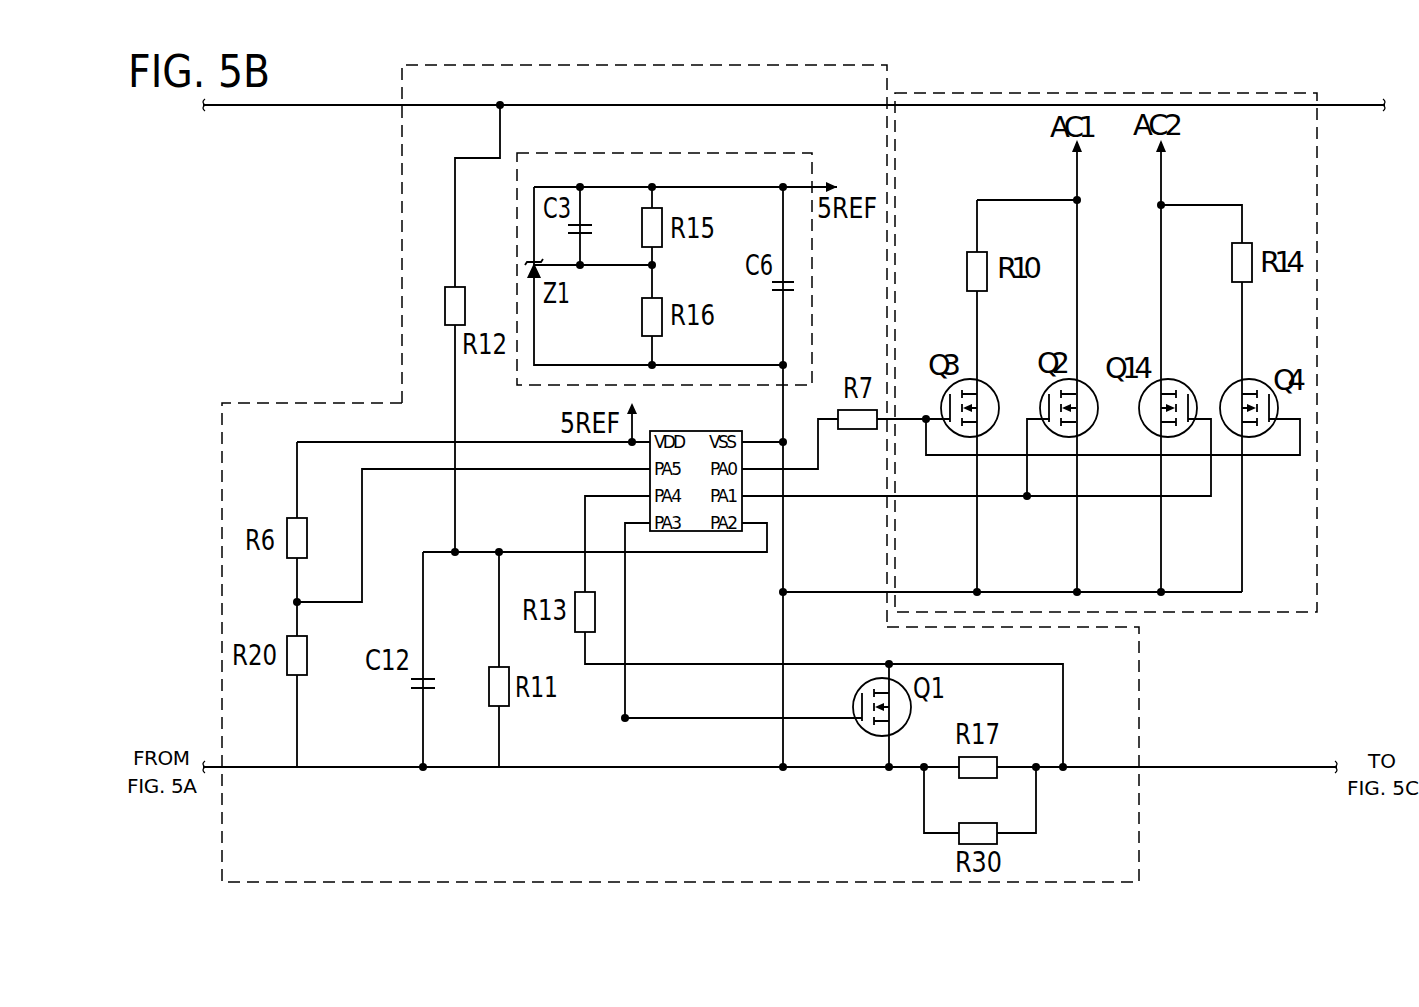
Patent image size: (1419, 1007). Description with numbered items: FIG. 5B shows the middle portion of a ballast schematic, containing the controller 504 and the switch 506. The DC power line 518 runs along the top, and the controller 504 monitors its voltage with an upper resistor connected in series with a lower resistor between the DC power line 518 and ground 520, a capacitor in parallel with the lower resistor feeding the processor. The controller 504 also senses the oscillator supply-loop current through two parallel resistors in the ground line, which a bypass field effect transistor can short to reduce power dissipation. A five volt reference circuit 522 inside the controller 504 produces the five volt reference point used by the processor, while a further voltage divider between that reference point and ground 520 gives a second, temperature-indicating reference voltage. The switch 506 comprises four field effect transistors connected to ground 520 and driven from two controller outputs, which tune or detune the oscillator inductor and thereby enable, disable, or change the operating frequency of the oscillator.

The controller 504 is at (402, 203).
The switch 506 is at (1237, 612).
The DC power line 518 is at (838, 105).
The ground 520 is at (583, 768).
The 5 volt reference circuit 522 is at (813, 327).